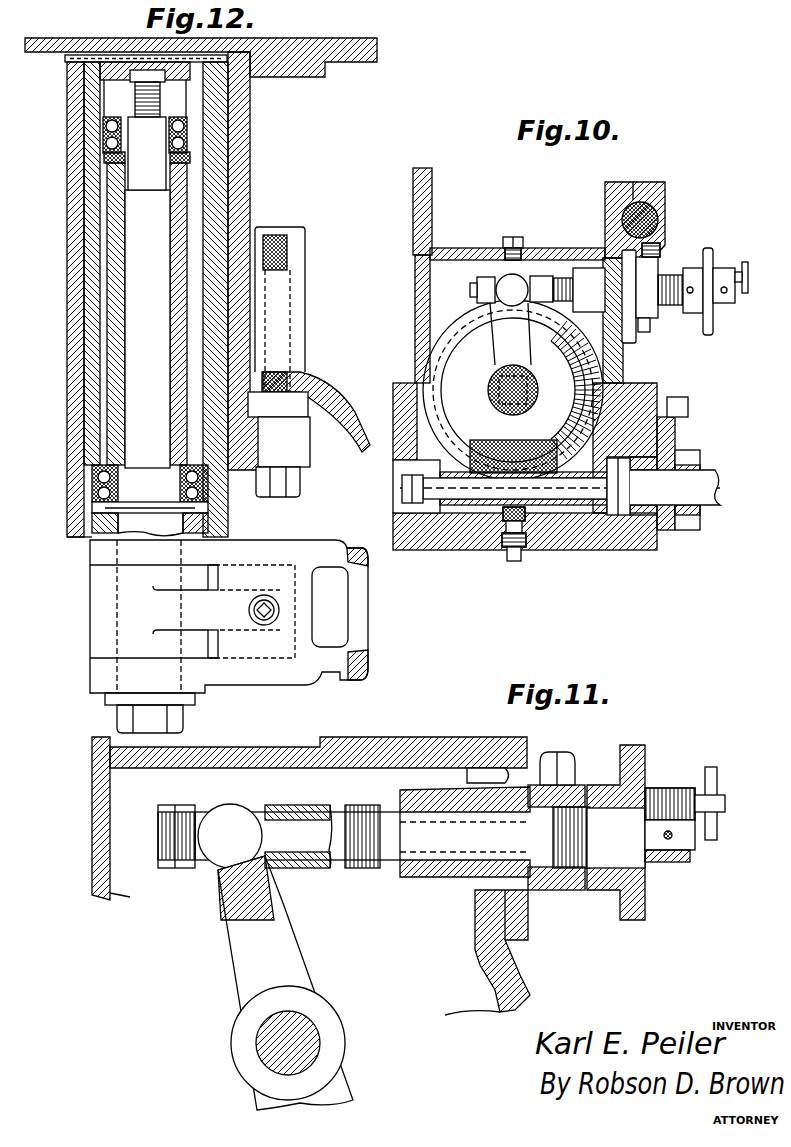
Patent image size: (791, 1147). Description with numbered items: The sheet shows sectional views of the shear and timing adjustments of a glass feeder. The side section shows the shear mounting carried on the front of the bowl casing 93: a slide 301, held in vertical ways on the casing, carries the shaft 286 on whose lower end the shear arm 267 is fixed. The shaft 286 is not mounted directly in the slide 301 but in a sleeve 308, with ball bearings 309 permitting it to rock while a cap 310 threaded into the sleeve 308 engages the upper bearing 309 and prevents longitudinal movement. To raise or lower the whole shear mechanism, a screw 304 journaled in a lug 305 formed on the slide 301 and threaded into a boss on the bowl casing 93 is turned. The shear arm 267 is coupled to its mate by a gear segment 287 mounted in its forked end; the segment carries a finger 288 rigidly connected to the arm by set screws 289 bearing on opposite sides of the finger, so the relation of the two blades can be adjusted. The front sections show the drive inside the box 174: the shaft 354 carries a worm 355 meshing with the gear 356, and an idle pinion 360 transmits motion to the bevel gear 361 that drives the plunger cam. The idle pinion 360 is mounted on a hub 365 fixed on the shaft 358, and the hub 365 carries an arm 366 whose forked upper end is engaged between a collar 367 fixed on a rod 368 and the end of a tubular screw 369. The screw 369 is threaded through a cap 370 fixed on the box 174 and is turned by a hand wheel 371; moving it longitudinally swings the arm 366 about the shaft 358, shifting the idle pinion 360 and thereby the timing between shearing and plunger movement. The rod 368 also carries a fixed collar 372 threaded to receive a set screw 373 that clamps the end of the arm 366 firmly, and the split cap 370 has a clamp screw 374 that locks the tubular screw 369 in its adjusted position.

In FIG. 12, the bowl casing 93 is at (240, 186).
In FIG. 10, the box 174 is at (431, 210).
In FIG. 11, the box 174 is at (418, 746).
In FIG. 12, the shear arm 267 is at (368, 620).
In FIG. 12, the shaft 286 is at (128, 232).
In FIG. 12, the gear segment 287 is at (95, 608).
In FIG. 12, the finger 288 is at (243, 590).
In FIG. 12, the set screw 289 is at (275, 598).
In FIG. 12, the slide 301 is at (215, 212).
In FIG. 12, the screw 304 is at (300, 489).
In FIG. 12, the lug 305 is at (303, 452).
In FIG. 12, the sleeve 308 is at (190, 172).
In FIG. 12, the ball bearing 309 is at (103, 145).
In FIG. 12, the cap 310 is at (115, 72).
In FIG. 10, the shaft 354 is at (706, 480).
In FIG. 10, the worm 355 is at (512, 512).
In FIG. 10, the gear 356 is at (478, 470).
In FIG. 10, the shaft 358 is at (505, 392).
In FIG. 11, the shaft 358 is at (305, 1030).
In FIG. 10, the idle pinion 360 is at (498, 445).
In FIG. 10, the bevel gear 361 is at (600, 381).
In FIG. 10, the hub 365 is at (562, 422).
In FIG. 11, the hub 365 is at (341, 1080).
In FIG. 10, the arm 366 is at (520, 284).
In FIG. 11, the arm 366 is at (280, 935).
In FIG. 10, the collar 367 is at (487, 278).
In FIG. 11, the collar 367 is at (193, 811).
In FIG. 10, the rod 368 is at (477, 291).
In FIG. 11, the rod 368 is at (287, 830).
In FIG. 10, the tubular screw 369 is at (542, 278).
In FIG. 11, the tubular screw 369 is at (378, 869).
In FIG. 10, the cap 370 is at (628, 334).
In FIG. 11, the cap 370 is at (459, 880).
In FIG. 10, the hand wheel 371 is at (708, 250).
In FIG. 11, the hand wheel 371 is at (621, 746).
In FIG. 10, the collar 372 is at (712, 272).
In FIG. 11, the collar 372 is at (680, 862).
In FIG. 10, the set screw 373 is at (745, 295).
In FIG. 11, the set screw 373 is at (708, 790).
In FIG. 10, the clamp screw 374 is at (660, 253).
In FIG. 11, the clamp screw 374 is at (560, 752).